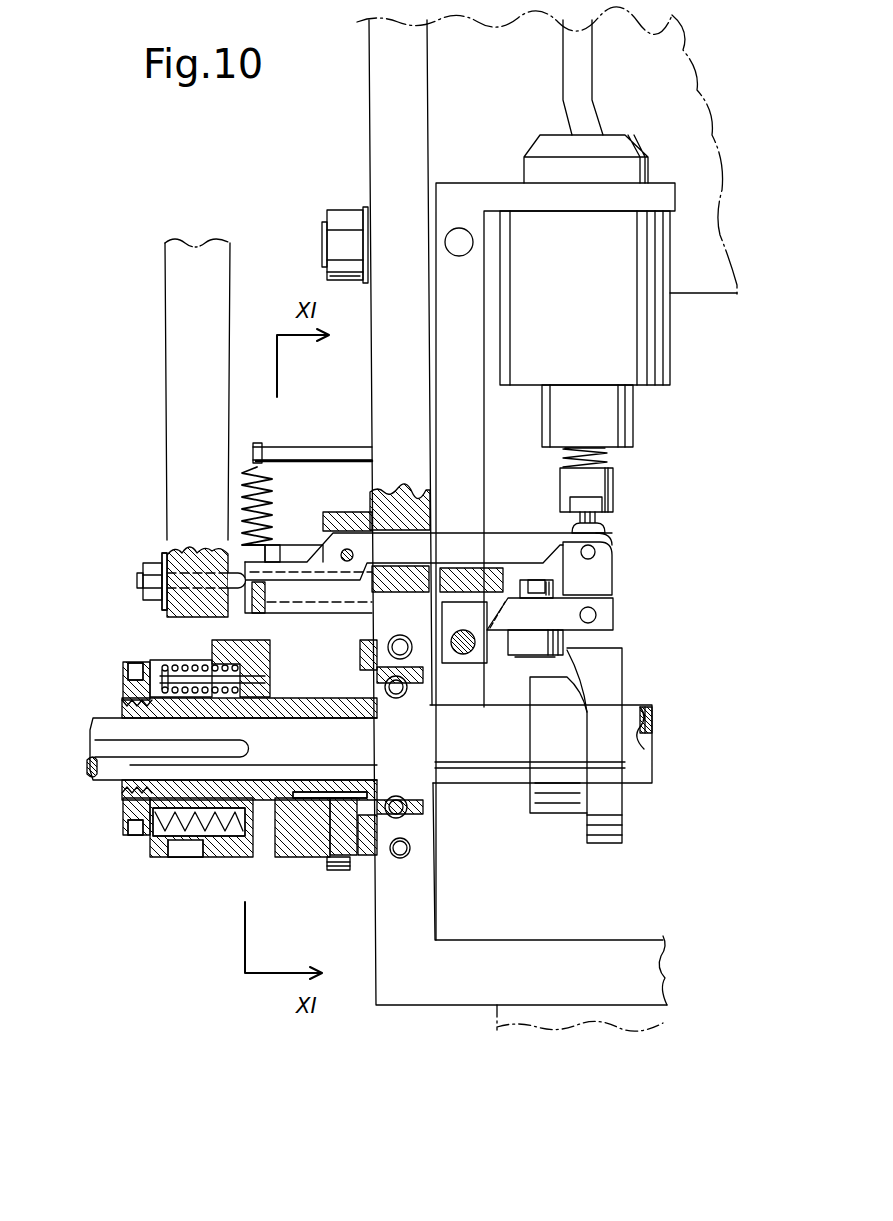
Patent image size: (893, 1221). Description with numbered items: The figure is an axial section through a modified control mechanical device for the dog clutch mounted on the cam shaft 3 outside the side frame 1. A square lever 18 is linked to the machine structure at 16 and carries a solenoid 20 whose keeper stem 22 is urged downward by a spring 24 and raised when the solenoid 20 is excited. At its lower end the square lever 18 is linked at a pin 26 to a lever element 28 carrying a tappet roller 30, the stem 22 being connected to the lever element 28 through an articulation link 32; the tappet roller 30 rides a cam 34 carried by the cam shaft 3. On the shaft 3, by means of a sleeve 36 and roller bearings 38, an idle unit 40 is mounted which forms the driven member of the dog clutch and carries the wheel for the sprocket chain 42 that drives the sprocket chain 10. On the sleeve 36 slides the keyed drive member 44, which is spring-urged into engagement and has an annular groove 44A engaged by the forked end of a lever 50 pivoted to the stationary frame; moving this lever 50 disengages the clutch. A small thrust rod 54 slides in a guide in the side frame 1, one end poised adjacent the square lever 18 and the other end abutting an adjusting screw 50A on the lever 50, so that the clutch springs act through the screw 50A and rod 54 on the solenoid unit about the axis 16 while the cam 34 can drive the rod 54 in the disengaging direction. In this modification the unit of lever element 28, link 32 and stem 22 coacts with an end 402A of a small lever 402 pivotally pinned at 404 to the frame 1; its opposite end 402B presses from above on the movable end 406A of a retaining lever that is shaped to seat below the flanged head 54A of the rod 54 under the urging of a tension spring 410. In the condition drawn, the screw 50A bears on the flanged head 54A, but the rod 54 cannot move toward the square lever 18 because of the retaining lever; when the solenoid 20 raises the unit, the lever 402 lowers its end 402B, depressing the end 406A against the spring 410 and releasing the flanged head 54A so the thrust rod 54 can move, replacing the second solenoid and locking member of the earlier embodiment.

The side frame 1 is at (359, 63).
The cam shaft 3 is at (490, 773).
The sprocket chain 10 is at (333, 871).
The pivot link 16 is at (463, 228).
The square lever 18 is at (472, 432).
The solenoid 20 is at (652, 408).
The stem 22 is at (600, 453).
The spring 24 is at (598, 462).
The link pin 26 is at (463, 656).
The lever element 28 is at (612, 620).
The tappet roller 30 is at (614, 630).
The articulation link 32 is at (630, 553).
The cam 34 is at (598, 822).
The sleeve 36 is at (127, 797).
The roller bearings 38 is at (342, 797).
The idle unit 40 is at (297, 847).
The sprocket chain wheel 42 is at (399, 654).
The drive member 44 is at (230, 860).
The annular groove 44A is at (195, 648).
The lever 50 is at (170, 348).
The adjusting screw 50A is at (166, 539).
The thrust rod 54 is at (292, 621).
The flanged head 54A is at (247, 590).
The small lever 402 is at (493, 537).
The lever end 402A is at (624, 539).
The opposite lever end 402B is at (275, 580).
The pivot pin 404 is at (347, 548).
The movable lever end 406A is at (228, 482).
The tension spring 410 is at (277, 480).